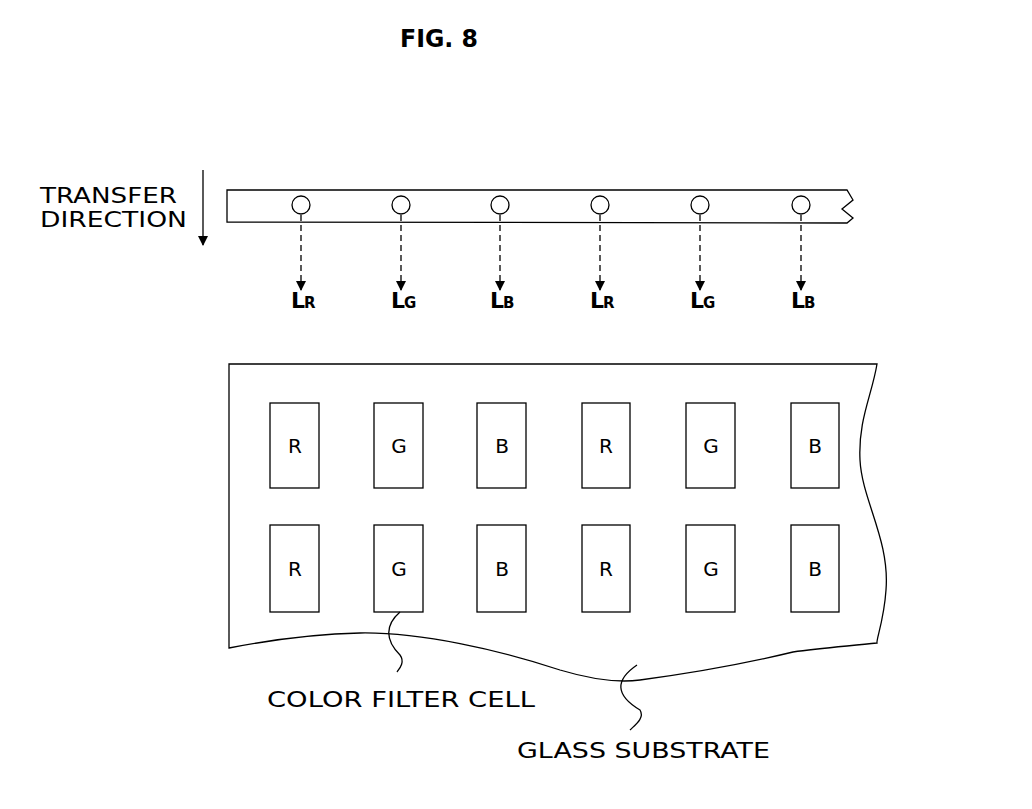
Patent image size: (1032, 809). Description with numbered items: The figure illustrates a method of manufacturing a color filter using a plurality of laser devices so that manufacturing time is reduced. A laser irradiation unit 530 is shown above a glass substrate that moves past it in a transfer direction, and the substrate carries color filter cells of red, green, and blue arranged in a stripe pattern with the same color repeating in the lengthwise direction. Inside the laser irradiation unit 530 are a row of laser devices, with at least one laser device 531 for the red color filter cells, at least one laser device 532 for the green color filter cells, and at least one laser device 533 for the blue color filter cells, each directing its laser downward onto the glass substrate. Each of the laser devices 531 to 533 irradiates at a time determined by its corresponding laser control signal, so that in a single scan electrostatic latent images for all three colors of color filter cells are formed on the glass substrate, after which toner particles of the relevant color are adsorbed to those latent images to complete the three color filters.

The laser irradiation unit 530 is at (726, 190).
The laser device for color filter cells of R 531 is at (296, 190).
The laser device for color filter cells of G 532 is at (396, 190).
The laser device for color filter cells of B 533 is at (495, 190).